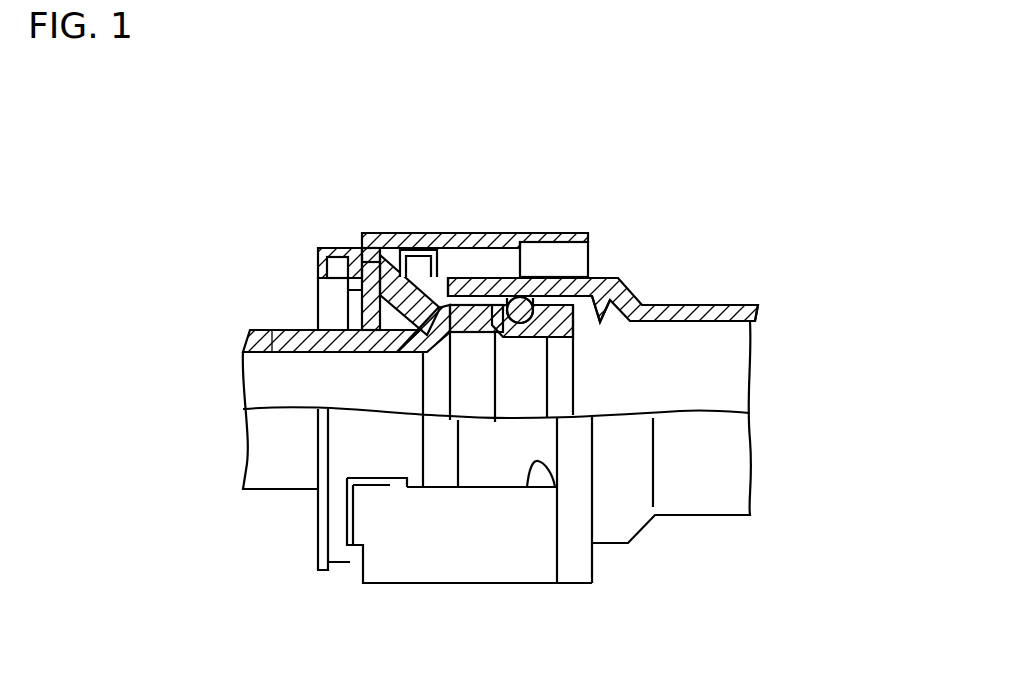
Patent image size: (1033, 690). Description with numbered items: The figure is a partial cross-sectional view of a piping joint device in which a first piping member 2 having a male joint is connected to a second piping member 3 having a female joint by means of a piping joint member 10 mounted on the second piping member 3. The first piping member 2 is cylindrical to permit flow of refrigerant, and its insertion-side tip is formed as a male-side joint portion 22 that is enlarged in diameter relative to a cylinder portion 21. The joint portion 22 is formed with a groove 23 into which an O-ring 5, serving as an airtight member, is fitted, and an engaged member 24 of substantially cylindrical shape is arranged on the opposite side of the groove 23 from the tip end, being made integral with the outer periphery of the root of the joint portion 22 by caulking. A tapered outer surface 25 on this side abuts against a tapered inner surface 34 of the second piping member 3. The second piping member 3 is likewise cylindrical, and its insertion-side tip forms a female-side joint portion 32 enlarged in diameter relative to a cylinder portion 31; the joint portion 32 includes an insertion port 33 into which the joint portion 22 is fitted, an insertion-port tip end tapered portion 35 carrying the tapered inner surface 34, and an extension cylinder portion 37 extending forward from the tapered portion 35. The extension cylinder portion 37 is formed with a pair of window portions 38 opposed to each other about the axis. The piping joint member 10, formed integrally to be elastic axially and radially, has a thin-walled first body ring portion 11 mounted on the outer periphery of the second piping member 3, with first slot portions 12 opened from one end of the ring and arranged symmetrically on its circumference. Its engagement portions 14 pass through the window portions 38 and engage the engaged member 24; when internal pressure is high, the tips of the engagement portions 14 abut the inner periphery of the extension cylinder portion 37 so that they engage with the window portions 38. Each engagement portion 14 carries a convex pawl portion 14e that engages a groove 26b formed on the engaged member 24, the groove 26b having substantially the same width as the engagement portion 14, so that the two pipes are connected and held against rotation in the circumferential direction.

The first piping member 2 is at (247, 313).
The cylinder portion 21 is at (272, 340).
The pawl portion 14e is at (307, 285).
The extension cylinder portion 37 is at (331, 248).
The groove 26b is at (372, 262).
The engagement portion 14 is at (412, 248).
The window portion 38 is at (409, 250).
The engaged member 24 is at (424, 258).
The insertion-port tip end tapered portion 35 is at (458, 278).
The tapered inner surface 34 is at (473, 325).
The first body ring portion 11 is at (508, 296).
The piping joint member 10 is at (548, 232).
The female-side joint portion 32 is at (546, 278).
The insertion port 33 is at (617, 277).
The second piping member 3 is at (697, 300).
The cylinder portion 31 is at (718, 305).
The tapered outer surface 25 is at (362, 548).
The groove 23 is at (495, 332).
The O-ring 5 is at (516, 320).
The first slot portion 12 is at (553, 487).
The male-side joint portion 22 is at (557, 337).